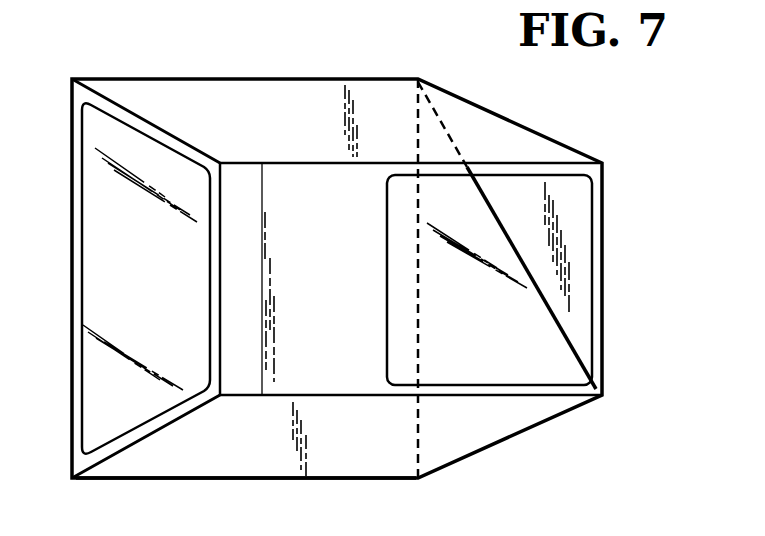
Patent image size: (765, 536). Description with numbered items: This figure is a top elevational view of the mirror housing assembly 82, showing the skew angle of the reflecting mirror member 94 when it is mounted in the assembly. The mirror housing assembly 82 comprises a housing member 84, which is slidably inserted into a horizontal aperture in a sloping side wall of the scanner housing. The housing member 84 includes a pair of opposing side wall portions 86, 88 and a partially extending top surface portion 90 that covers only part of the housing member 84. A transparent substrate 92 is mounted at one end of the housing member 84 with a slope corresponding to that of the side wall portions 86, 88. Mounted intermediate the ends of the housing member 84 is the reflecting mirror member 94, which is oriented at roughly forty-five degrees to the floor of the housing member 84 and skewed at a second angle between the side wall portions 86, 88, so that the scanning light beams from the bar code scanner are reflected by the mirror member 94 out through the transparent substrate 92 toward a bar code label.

The mirror housing assembly 82 is at (563, 438).
The housing member 84 is at (228, 480).
The side wall portion 86 is at (320, 470).
The side wall portion 88 is at (373, 88).
The top surface portion 90 is at (295, 182).
The transparent substrate 92 is at (95, 407).
The reflecting mirror member 94 is at (565, 368).